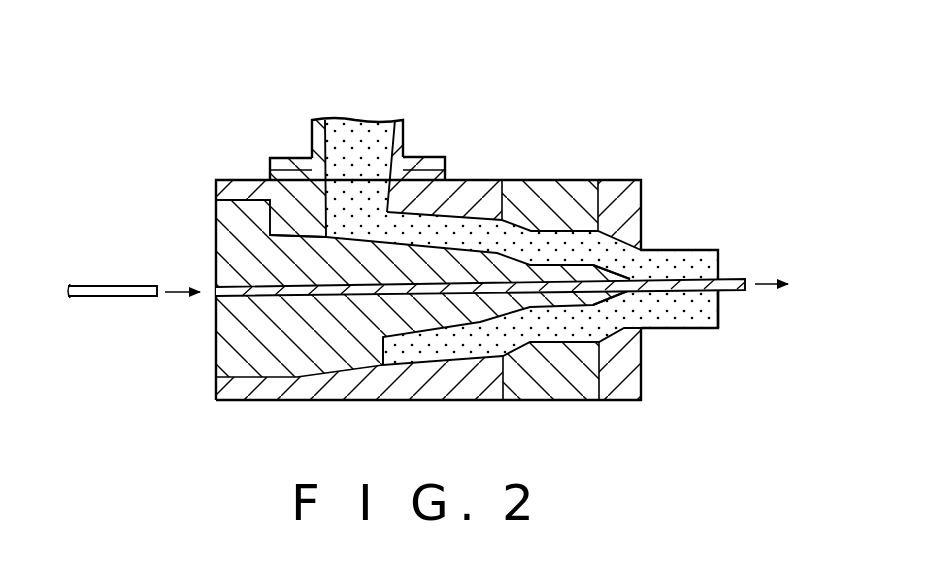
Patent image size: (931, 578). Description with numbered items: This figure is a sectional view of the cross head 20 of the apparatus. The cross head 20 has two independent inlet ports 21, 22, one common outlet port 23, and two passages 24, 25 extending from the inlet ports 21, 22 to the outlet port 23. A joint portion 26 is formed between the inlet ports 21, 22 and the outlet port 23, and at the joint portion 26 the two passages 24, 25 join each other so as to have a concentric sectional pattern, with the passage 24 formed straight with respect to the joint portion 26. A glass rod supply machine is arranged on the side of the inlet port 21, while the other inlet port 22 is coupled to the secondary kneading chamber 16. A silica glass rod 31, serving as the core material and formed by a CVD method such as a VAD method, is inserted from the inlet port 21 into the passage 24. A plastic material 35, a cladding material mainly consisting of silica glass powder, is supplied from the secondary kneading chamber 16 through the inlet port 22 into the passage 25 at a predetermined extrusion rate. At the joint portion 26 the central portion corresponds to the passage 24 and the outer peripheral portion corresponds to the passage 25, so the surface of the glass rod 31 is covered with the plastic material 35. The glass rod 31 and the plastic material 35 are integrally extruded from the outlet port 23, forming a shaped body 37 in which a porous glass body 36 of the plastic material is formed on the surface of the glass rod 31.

The secondary kneading chamber 16 is at (404, 154).
The cross head 20 is at (641, 131).
The inlet port 21 is at (251, 296).
The inlet port 22 is at (338, 227).
The outlet port 23 is at (640, 253).
The passage 24 is at (411, 289).
The passage 25 is at (522, 247).
The joint portion 26 is at (647, 307).
The silica glass rod 31 is at (128, 298).
The plastic material 35 is at (346, 121).
The porous glass body 36 is at (706, 244).
The shaped body 37 is at (727, 322).